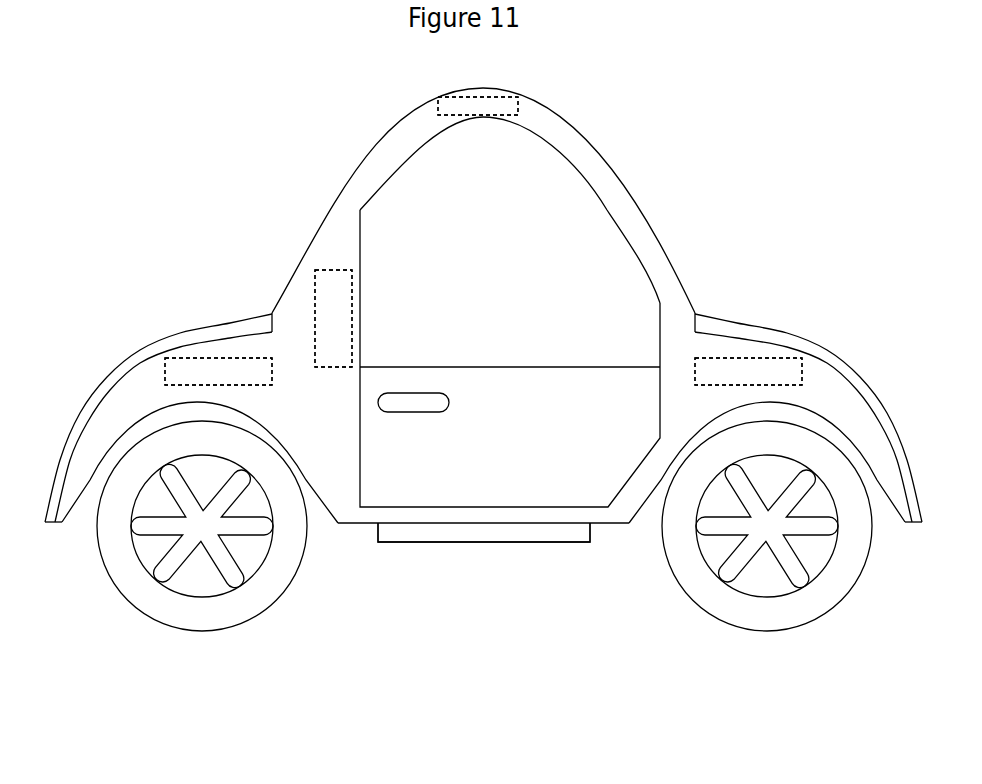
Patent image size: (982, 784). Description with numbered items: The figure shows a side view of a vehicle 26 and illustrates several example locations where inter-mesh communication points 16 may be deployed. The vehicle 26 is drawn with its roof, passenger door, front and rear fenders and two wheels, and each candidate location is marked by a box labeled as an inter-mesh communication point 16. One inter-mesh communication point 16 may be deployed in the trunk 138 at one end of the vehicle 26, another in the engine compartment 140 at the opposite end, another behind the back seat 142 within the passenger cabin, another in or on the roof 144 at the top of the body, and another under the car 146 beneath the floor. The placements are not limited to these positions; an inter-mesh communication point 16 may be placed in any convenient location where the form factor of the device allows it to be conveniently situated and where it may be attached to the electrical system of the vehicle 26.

The vehicle 26 is at (643, 172).
The inter-mesh communication point 16 is at (483, 319).
The trunk 138 is at (209, 346).
The engine compartment 140 is at (758, 348).
The behind the back seat 142 is at (342, 260).
The roof 144 is at (482, 86).
The under the car 146 is at (476, 562).